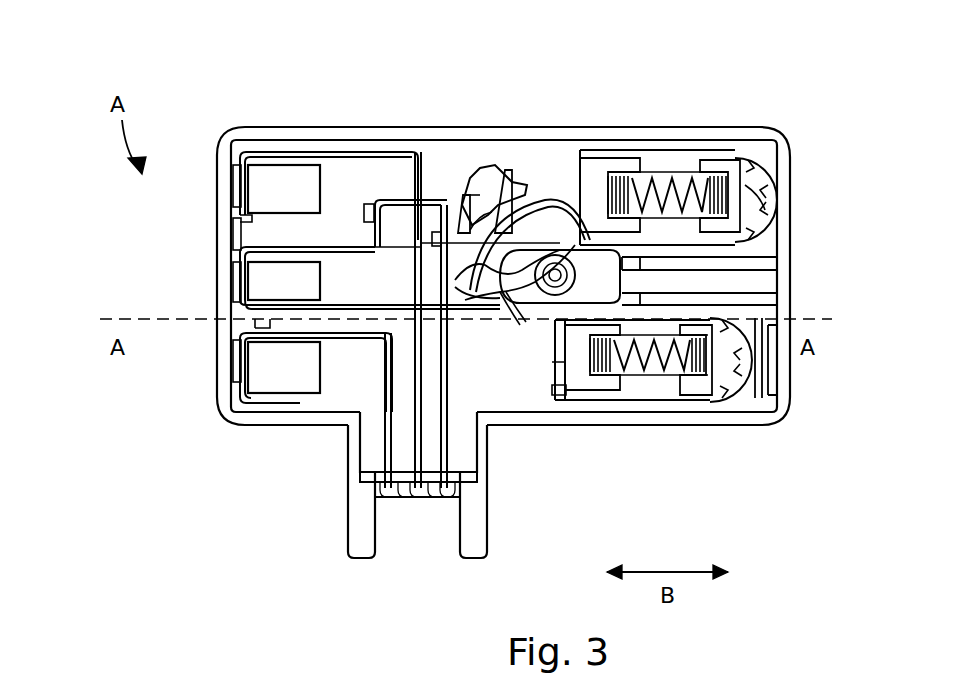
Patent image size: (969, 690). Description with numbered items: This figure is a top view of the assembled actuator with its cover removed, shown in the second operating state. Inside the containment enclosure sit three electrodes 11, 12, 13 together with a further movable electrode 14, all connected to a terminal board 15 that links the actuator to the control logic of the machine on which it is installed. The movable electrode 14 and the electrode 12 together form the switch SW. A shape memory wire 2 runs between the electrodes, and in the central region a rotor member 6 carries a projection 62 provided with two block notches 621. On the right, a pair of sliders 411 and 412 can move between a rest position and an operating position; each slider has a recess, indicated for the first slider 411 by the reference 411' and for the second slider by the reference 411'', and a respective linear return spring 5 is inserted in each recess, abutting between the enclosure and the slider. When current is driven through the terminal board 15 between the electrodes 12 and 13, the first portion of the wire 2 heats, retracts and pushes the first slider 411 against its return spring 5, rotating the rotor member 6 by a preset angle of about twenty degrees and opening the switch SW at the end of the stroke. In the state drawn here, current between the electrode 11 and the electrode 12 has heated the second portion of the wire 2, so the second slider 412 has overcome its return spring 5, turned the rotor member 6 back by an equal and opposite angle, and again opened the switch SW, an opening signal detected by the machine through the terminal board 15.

The shape memory wire 2 is at (470, 215).
The return spring 5 is at (677, 180).
The rotor member 6 is at (587, 287).
The electrode 11 is at (250, 372).
The electrode 12 is at (236, 292).
The electrode 13 is at (232, 190).
The movable electrode 14 is at (445, 280).
The terminal board 15 is at (430, 543).
The projection 62 is at (548, 200).
The block notches 621 is at (520, 218).
The first slider 411 is at (800, 196).
The recess 411' is at (732, 164).
The lower plunger head 411'' is at (672, 416).
The second slider 412 is at (720, 357).
The switch SW is at (497, 175).